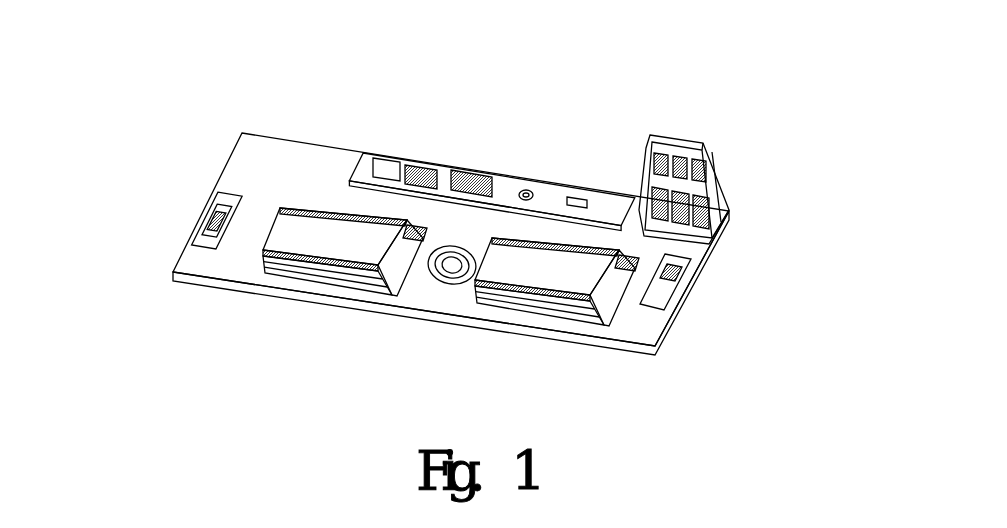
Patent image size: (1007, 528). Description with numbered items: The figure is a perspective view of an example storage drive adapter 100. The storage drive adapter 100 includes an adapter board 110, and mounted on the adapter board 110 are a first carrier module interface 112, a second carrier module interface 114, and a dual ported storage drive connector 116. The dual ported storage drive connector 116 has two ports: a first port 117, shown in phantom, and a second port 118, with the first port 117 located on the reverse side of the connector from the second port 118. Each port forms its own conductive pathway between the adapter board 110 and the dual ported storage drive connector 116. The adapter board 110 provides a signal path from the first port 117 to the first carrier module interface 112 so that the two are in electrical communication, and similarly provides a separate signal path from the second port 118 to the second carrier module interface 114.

The storage drive adapter 100 is at (792, 208).
The adapter board 110 is at (258, 175).
The first carrier module interface 112 is at (280, 227).
The second carrier module interface 114 is at (600, 259).
The dual ported storage drive connector 116 is at (578, 174).
The first port 117 is at (417, 175).
The second port 118 is at (470, 183).